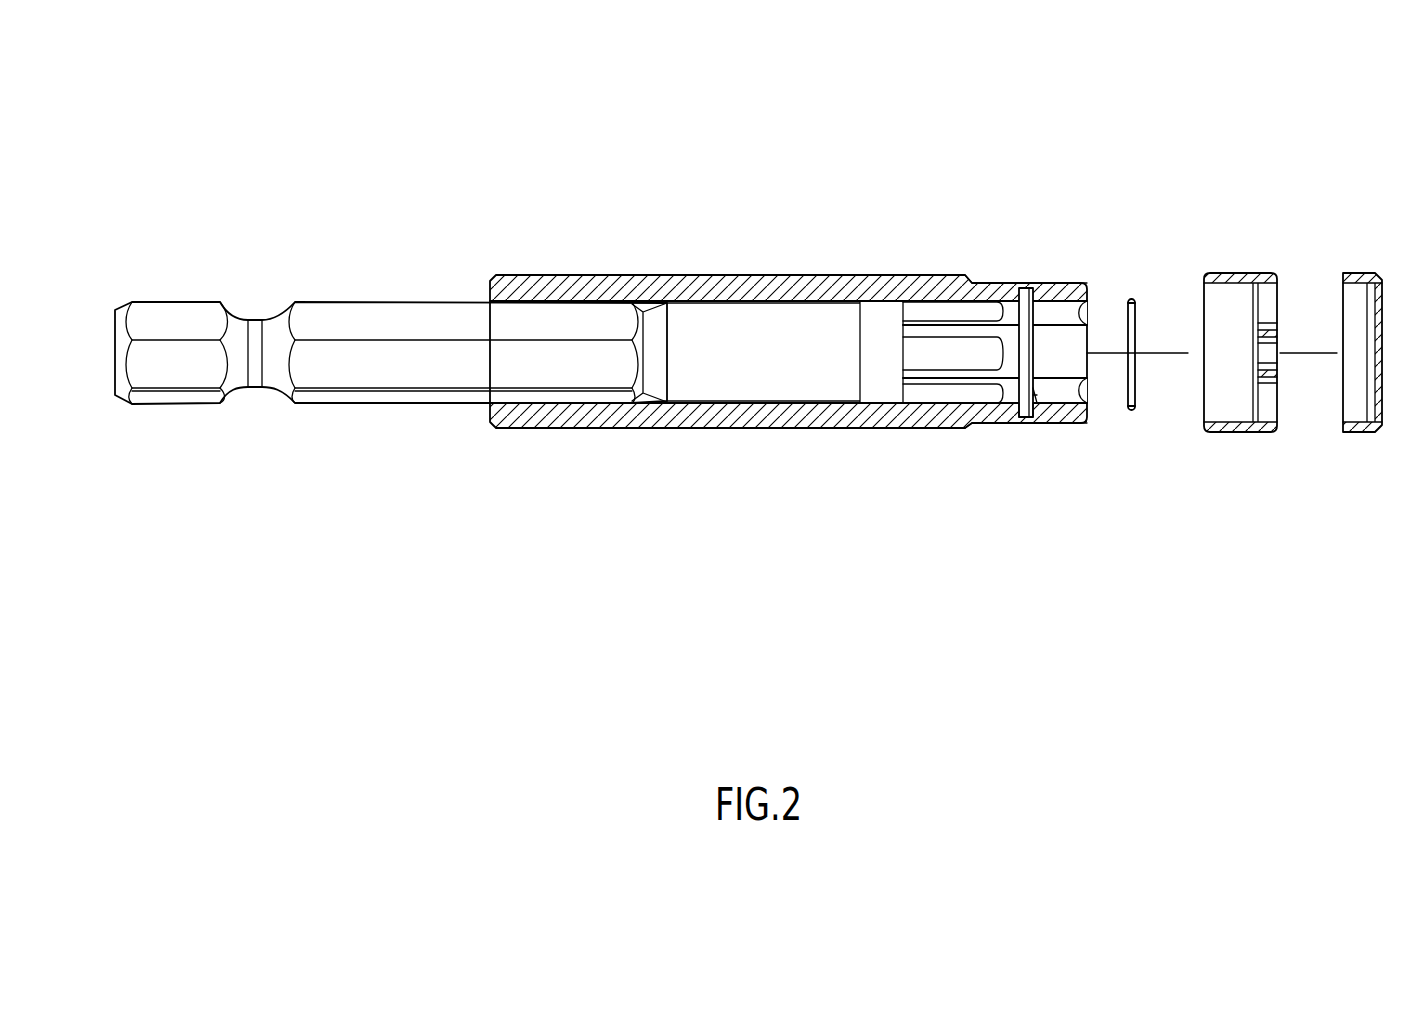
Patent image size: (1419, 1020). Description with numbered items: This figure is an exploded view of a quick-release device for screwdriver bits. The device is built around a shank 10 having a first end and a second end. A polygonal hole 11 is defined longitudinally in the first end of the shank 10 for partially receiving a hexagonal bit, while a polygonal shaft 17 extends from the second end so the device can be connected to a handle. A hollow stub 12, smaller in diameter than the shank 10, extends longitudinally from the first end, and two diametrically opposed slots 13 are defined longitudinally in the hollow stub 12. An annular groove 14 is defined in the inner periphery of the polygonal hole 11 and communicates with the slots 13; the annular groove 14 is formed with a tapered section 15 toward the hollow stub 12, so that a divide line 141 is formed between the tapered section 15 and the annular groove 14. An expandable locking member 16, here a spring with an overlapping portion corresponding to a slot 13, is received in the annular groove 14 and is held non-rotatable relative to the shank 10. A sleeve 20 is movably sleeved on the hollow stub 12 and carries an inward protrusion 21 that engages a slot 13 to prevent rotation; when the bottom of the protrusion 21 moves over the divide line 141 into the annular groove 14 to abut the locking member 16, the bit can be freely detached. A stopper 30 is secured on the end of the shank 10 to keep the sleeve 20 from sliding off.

The shank 10 is at (800, 250).
The polygonal hole 11 is at (937, 355).
The hollow stub 12 is at (1000, 281).
The slot 13 is at (1105, 283).
The annular groove 14 is at (1035, 283).
The divide line 141 is at (1036, 396).
The tapered section 15 is at (1032, 409).
The locking member 16 is at (1132, 390).
The polygonal shaft 17 is at (348, 325).
The sleeve 20 is at (1269, 312).
The protrusion 21 is at (1268, 350).
The stopper 30 is at (1318, 256).